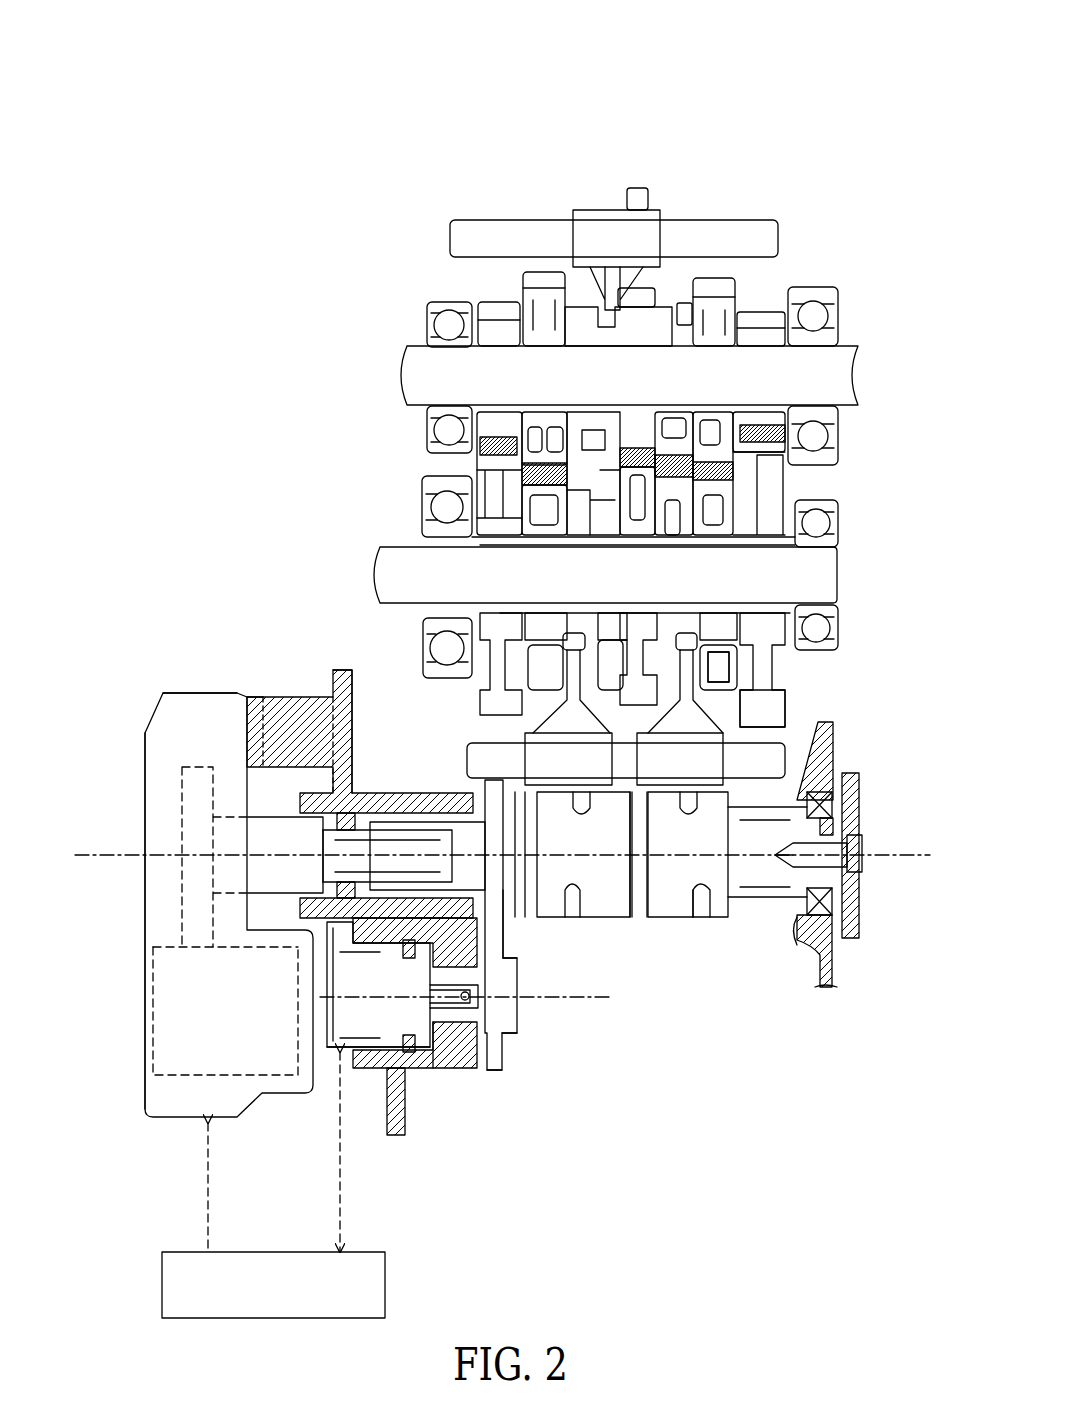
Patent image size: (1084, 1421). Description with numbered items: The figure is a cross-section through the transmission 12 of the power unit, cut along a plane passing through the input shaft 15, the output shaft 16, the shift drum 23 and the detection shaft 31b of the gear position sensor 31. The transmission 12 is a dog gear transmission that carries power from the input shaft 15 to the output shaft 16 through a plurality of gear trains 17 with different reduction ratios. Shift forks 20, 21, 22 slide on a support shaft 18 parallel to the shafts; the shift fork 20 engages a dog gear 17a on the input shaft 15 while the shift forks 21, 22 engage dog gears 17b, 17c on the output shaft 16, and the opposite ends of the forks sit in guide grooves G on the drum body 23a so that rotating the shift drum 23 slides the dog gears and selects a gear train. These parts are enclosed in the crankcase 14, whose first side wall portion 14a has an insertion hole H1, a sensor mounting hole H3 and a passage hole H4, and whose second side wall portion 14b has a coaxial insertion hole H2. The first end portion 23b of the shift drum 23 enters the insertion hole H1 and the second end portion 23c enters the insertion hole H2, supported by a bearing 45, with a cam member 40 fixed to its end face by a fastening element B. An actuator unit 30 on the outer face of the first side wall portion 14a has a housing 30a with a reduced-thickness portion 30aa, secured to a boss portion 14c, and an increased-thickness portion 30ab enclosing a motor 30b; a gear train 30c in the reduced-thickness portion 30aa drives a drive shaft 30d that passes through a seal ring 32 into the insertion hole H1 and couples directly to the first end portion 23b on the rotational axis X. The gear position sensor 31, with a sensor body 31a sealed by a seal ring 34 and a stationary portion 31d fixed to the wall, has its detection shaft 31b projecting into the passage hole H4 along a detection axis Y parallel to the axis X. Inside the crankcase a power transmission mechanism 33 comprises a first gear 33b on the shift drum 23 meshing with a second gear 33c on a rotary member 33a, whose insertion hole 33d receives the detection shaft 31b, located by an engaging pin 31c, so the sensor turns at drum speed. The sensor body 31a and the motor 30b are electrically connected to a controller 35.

The transmission 12 is at (441, 128).
The crankcase 14 is at (325, 688).
The first side wall portion 14a is at (354, 720).
The second side wall portion 14b is at (833, 745).
The boss portion 14c is at (274, 692).
The input shaft 15 is at (422, 372).
The output shaft 16 is at (817, 575).
The gear trains 17 is at (453, 288).
The dog gear 17a is at (660, 290).
The dog gear 17b is at (725, 672).
The dog gear 17c is at (537, 657).
The support shaft 18 is at (808, 290).
The shift fork 20 is at (602, 232).
The shift fork 21 is at (760, 727).
The shift fork 22 is at (530, 760).
The shift drum 23 is at (720, 920).
The drum body 23a is at (700, 920).
The first end portion 23b is at (436, 830).
The second end portion 23c is at (855, 820).
The actuator unit 30 is at (144, 730).
The housing 30a is at (150, 1100).
The reduced-thickness portion 30aa is at (183, 693).
The increased-thickness portion 30ab is at (255, 1120).
The motor 30b is at (170, 1005).
The gear train 30c is at (180, 908).
The drive shaft 30d is at (279, 842).
The gear position sensor 31 is at (360, 990).
The sensor body 31a is at (380, 1028).
The detection shaft 31b is at (453, 1012).
The engaging pin 31c is at (467, 1002).
The stationary portion 31d is at (345, 1036).
The seal ring 32 is at (378, 835).
The power transmission mechanism 33 is at (518, 1055).
The rotary member 33a is at (512, 1045).
The first gear 33b is at (497, 905).
The second gear 33c is at (512, 1072).
The insertion hole 33d is at (478, 975).
The seal ring 34 is at (407, 1050).
The controller 35 is at (385, 1283).
The cam member 40 is at (855, 790).
The bearing 45 is at (812, 948).
The rotational axis X is at (86, 852).
The detection axis Y is at (545, 997).
The guide grooves G is at (580, 910).
The fastening element B is at (862, 860).
The insertion hole H1 is at (396, 830).
The insertion hole H2 is at (795, 903).
The sensor mounting hole H3 is at (361, 1152).
The passage hole H4 is at (455, 1032).